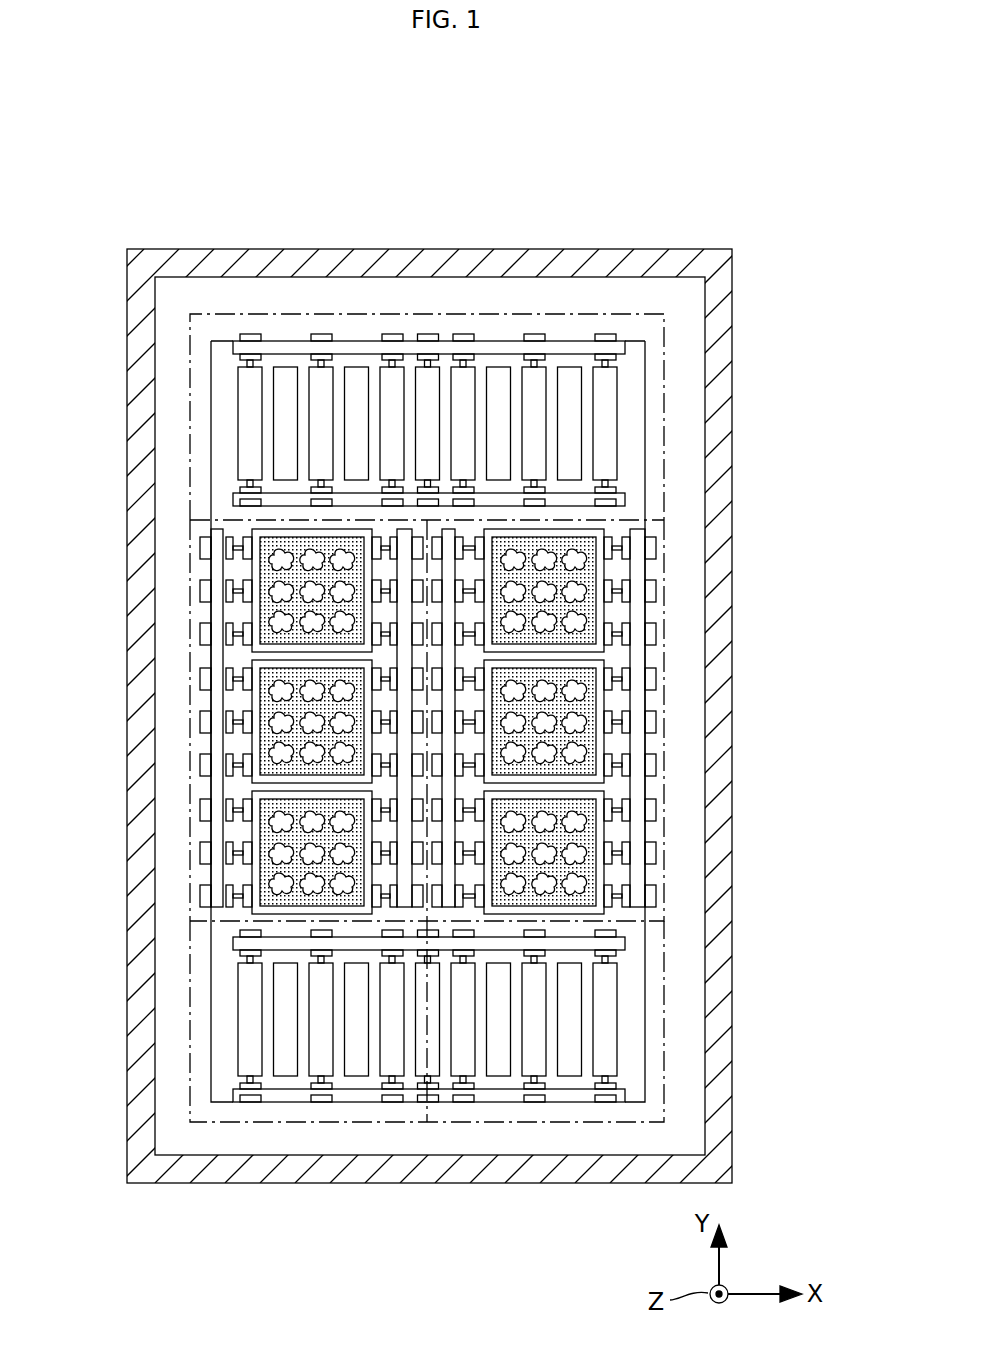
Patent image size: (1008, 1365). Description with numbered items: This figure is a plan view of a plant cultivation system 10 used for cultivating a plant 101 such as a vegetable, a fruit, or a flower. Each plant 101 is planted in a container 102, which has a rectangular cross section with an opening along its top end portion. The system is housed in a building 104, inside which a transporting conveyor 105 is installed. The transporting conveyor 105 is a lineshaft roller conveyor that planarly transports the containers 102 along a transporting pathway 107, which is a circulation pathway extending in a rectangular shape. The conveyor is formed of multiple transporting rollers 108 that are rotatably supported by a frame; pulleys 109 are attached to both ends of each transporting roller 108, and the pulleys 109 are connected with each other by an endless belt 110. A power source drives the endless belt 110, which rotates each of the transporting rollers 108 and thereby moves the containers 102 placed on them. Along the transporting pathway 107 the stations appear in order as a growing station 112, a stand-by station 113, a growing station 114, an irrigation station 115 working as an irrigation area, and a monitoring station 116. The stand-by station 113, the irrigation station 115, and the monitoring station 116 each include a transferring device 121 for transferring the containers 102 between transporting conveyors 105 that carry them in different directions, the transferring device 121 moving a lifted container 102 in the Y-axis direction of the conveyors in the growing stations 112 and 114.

The plant cultivation system 10 is at (766, 217).
The plant 101 is at (595, 708).
The container 102 is at (260, 565).
The building 104 is at (732, 278).
The transporting conveyor 105 is at (360, 327).
The transporting pathway 107 is at (553, 313).
The transporting roller 108 is at (460, 392).
The pulley 109 is at (532, 337).
The endless belt 110 is at (647, 347).
The growing station 112 is at (700, 553).
The stand-by station 113 is at (700, 322).
The growing station 114 is at (187, 757).
The irrigation station 115 is at (228, 1122).
The monitoring station 116 is at (477, 1122).
The transferring device 121 is at (355, 415).